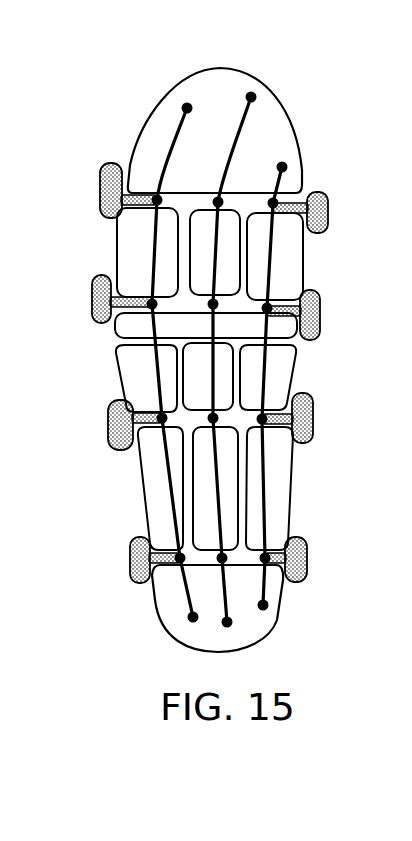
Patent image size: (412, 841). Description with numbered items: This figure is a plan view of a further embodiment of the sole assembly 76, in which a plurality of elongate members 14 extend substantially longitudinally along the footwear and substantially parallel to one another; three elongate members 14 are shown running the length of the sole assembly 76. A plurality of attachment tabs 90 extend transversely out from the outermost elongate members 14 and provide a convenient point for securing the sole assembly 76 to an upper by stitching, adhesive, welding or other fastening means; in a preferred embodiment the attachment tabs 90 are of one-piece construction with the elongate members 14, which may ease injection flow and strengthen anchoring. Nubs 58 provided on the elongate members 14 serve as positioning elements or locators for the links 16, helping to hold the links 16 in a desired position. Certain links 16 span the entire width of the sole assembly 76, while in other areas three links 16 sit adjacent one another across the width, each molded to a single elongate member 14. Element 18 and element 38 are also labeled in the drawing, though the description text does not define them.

The sole assembly 76 is at (194, 108).
The upper 18 is at (142, 132).
The nubs 58 is at (215, 192).
The links 16 is at (124, 322).
The attachment tabs 90 is at (320, 313).
The elongate members 14 is at (217, 458).
The heel portion 38 is at (152, 596).